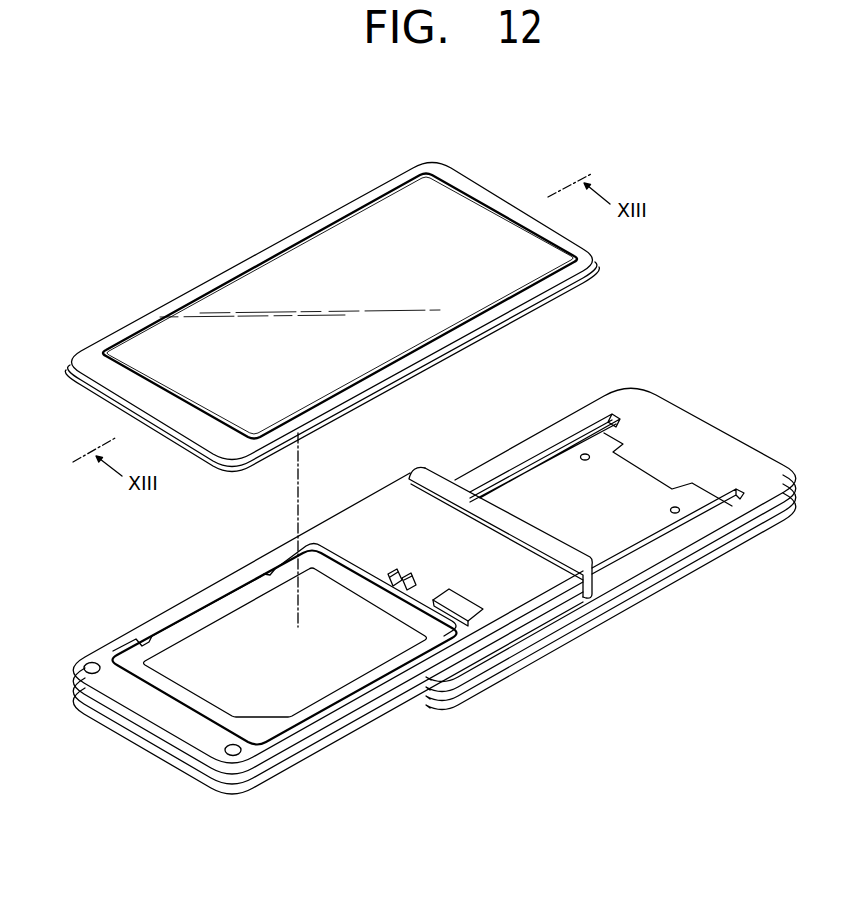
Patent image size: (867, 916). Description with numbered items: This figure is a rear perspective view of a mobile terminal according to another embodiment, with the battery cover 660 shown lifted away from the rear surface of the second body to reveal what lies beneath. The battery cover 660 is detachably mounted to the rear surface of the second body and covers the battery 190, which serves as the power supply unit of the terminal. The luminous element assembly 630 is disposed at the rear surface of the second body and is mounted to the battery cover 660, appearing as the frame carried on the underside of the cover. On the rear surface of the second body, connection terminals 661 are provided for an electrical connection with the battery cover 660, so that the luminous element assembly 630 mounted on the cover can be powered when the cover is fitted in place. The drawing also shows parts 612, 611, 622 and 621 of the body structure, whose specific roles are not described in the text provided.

The battery cover 660 is at (338, 211).
The luminous element assembly 630 is at (265, 272).
The connection terminals 661 is at (391, 574).
The battery 190 is at (218, 628).
The upper body 612 is at (683, 567).
The lower body 611 is at (623, 603).
The frame 622 is at (333, 727).
The lower case 621 is at (287, 763).